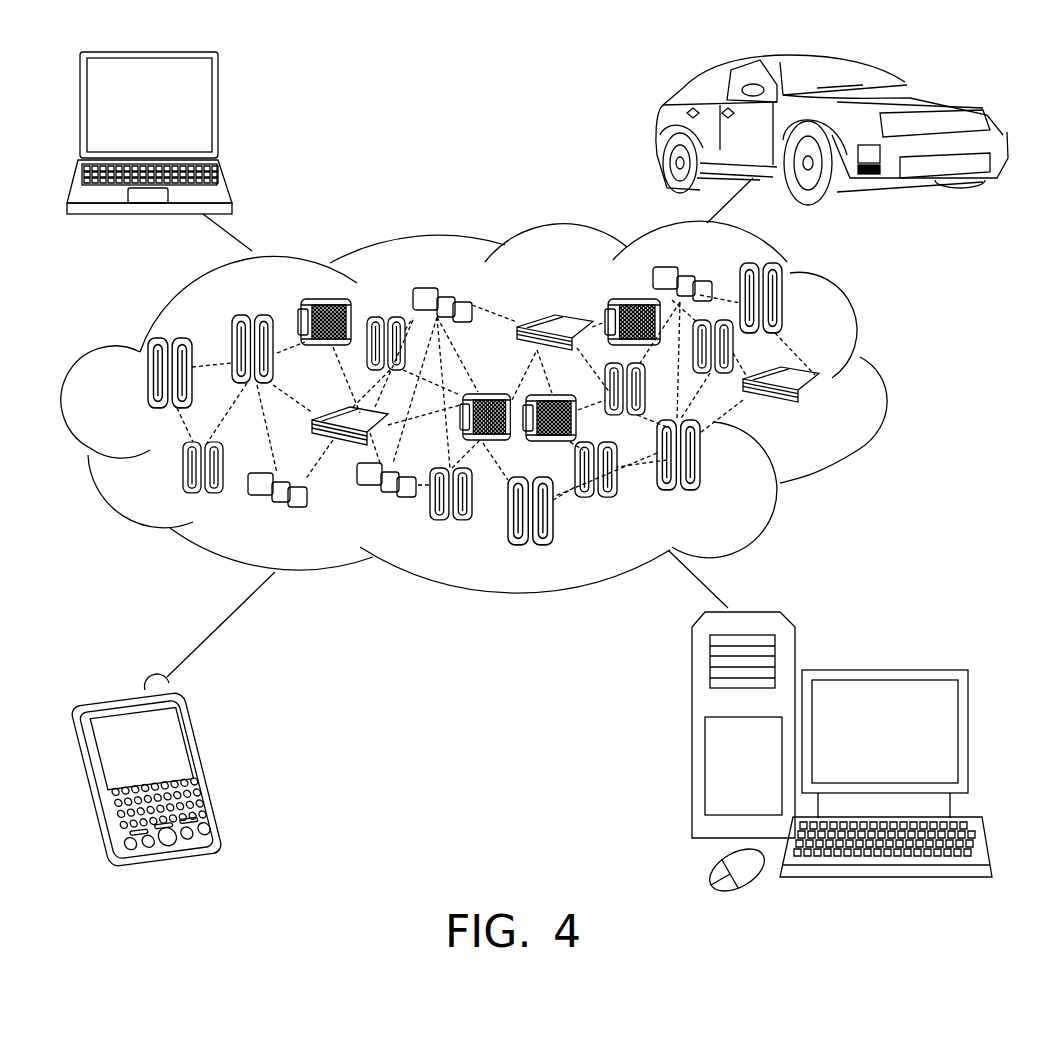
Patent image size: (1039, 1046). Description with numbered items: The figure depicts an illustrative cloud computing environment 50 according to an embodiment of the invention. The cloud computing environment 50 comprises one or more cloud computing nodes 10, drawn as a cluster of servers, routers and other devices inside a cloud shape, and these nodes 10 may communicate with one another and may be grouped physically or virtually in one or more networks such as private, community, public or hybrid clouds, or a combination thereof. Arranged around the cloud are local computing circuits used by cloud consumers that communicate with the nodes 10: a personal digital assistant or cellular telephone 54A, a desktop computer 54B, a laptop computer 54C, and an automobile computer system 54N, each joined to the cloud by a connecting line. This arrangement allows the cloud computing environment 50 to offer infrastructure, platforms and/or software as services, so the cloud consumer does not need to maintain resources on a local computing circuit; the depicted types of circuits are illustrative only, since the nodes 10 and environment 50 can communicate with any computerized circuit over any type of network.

The cloud computing node 10 is at (826, 413).
The cloud computing environment 50 is at (882, 383).
The personal digital assistant or cellular telephone 54A is at (207, 760).
The desktop computer 54B is at (880, 668).
The laptop computer 54C is at (218, 113).
The automobile computer system 54N is at (663, 132).